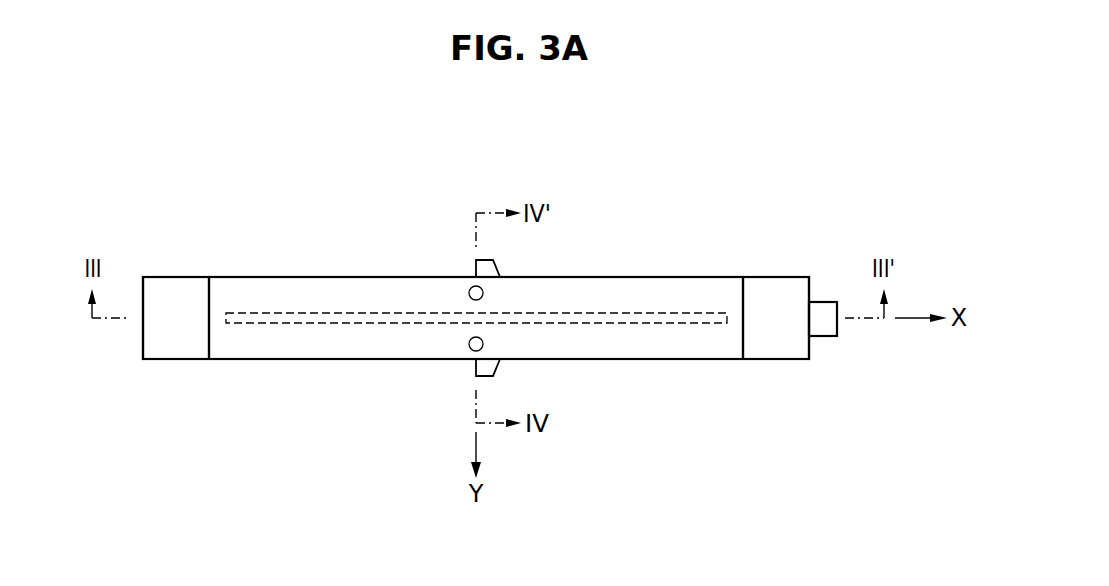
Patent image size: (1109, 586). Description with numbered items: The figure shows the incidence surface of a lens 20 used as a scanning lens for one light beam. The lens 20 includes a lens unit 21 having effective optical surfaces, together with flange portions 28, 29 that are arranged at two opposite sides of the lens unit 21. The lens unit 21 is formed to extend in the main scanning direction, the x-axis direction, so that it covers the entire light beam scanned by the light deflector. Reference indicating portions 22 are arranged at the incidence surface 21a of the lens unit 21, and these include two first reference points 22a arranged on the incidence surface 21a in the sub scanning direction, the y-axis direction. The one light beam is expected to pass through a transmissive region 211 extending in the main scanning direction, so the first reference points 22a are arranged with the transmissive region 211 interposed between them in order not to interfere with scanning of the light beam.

The lens 20 is at (780, 250).
The lens unit 21 is at (633, 432).
The incidence surface 21a is at (606, 353).
The transmissive region 211 is at (264, 316).
The reference indicating portions 22 is at (414, 206).
The first reference points 22a is at (469, 344).
The flange portion 28 is at (196, 352).
The flange portion 29 is at (795, 352).